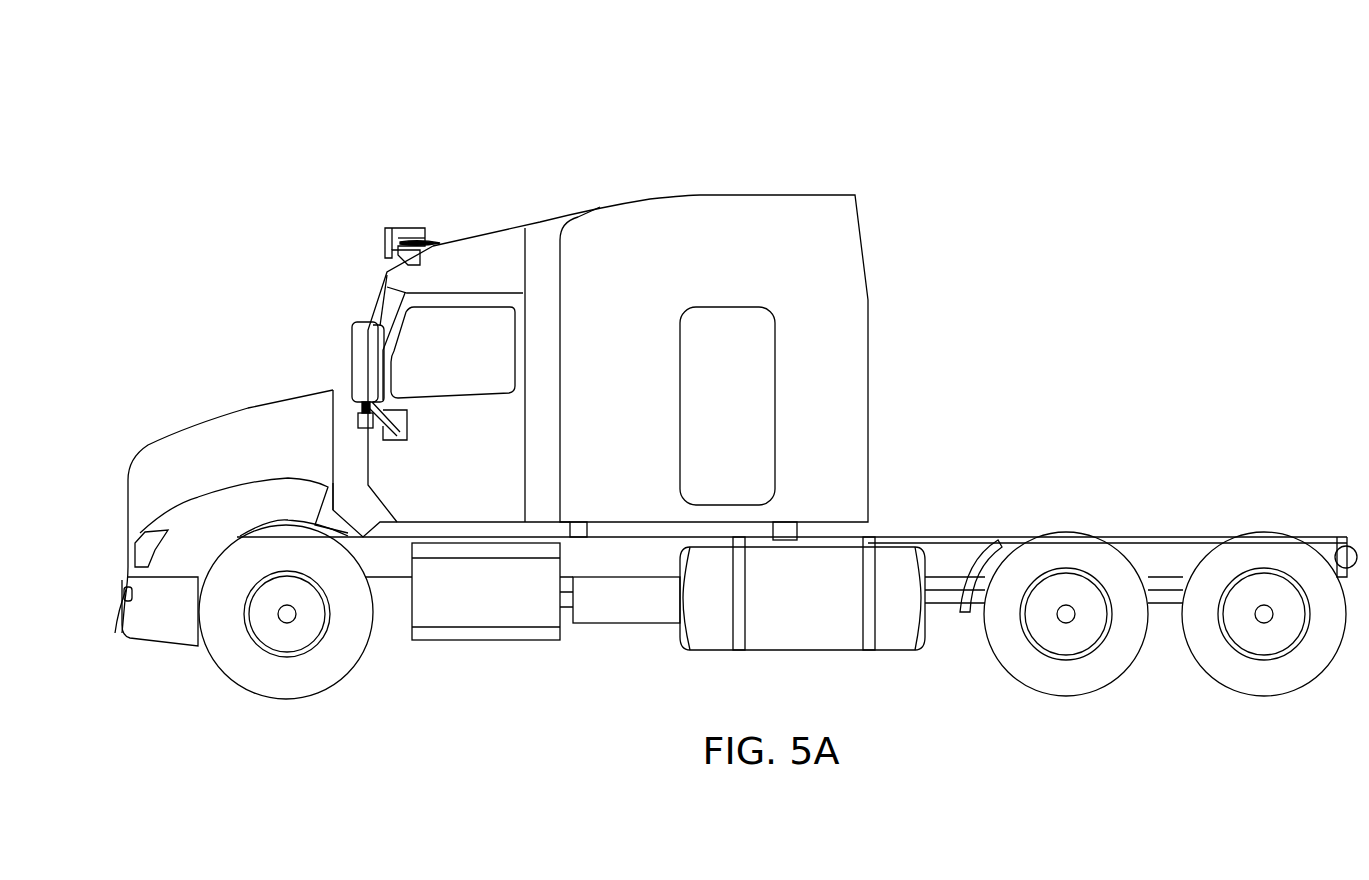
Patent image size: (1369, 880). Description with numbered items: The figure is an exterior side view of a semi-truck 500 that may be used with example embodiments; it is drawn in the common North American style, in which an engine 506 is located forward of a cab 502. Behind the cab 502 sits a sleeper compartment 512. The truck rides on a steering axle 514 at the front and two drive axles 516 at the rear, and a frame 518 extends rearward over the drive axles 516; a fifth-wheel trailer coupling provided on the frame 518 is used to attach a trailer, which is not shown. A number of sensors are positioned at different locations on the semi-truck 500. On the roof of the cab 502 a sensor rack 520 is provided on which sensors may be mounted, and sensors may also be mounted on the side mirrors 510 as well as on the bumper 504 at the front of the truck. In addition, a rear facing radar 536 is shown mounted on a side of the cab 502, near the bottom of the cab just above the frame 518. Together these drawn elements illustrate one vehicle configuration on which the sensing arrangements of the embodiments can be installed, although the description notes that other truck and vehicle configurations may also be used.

The semi-truck 500 is at (438, 103).
The cab 502 is at (470, 240).
The bumper 504 is at (115, 640).
The engine 506 is at (220, 412).
The side mirrors 510 is at (366, 323).
The sleeper compartment 512 is at (735, 194).
The steering axle 514 is at (332, 658).
The drive axles 516 is at (1062, 680).
The frame 518 is at (1172, 535).
The sensor rack 520 is at (401, 222).
The rear facing radar 536 is at (578, 524).